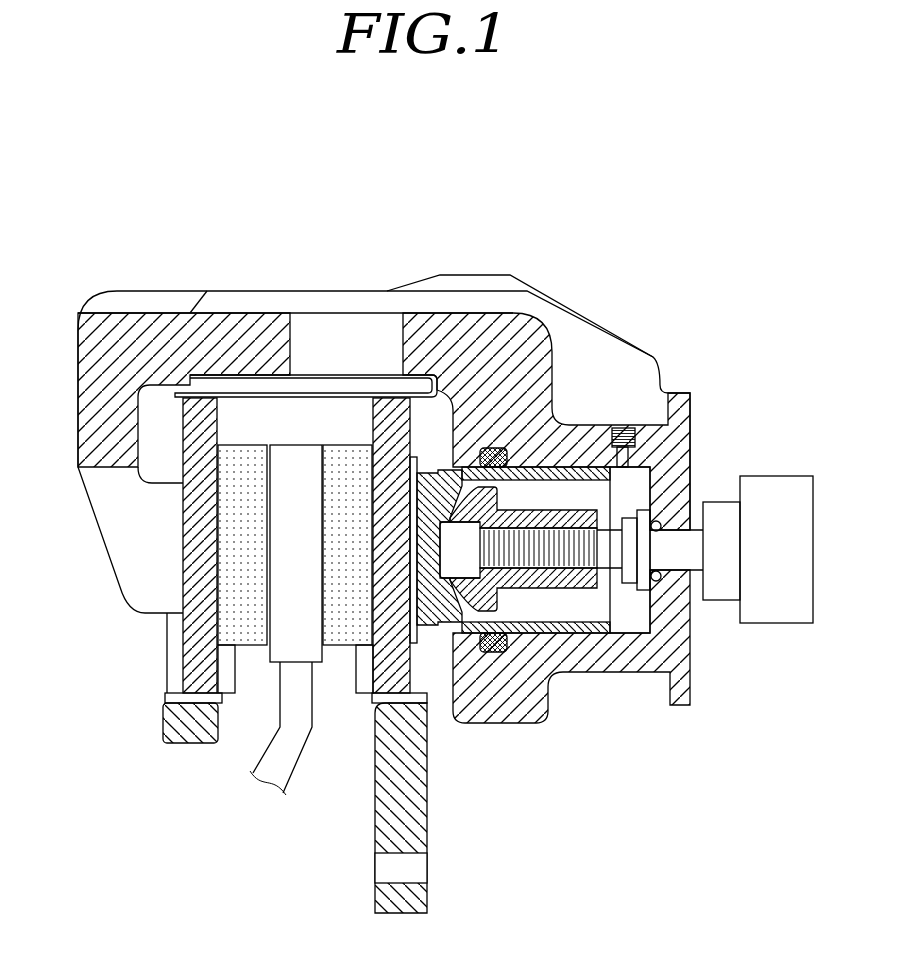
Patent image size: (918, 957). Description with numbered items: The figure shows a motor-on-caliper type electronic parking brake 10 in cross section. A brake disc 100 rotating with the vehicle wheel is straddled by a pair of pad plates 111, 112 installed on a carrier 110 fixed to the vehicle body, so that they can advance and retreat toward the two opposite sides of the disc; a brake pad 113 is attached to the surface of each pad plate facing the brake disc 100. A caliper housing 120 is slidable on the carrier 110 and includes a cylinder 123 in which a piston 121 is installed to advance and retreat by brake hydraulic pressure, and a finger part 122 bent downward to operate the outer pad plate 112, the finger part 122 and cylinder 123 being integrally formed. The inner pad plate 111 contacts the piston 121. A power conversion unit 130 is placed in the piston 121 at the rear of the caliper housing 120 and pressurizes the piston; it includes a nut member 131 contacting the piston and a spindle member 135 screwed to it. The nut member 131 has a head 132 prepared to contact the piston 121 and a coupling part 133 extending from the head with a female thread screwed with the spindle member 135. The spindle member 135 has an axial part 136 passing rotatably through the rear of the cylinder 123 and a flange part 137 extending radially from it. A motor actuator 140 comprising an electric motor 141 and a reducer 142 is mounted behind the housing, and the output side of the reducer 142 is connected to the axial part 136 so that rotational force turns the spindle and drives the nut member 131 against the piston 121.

The electronic parking brake 10 is at (474, 184).
The brake disc 100 is at (286, 762).
The carrier 110 is at (383, 833).
The inner pad plate 111 is at (372, 693).
The outer pad plate 112 is at (192, 643).
The brake pad 113 is at (251, 646).
The caliper housing 120 is at (278, 300).
The piston 121 is at (428, 605).
The finger part 122 is at (108, 520).
The cylinder 123 is at (680, 393).
The power conversion unit 130 is at (562, 488).
The nut member 131 is at (519, 672).
The head 132 is at (472, 600).
The coupling part 133 is at (548, 585).
The spindle member 135 is at (672, 674).
The axial part 136 is at (656, 578).
The flange part 137 is at (628, 566).
The motor actuator 140 is at (754, 501).
The electric motor 141 is at (767, 478).
The reducer 142 is at (728, 502).